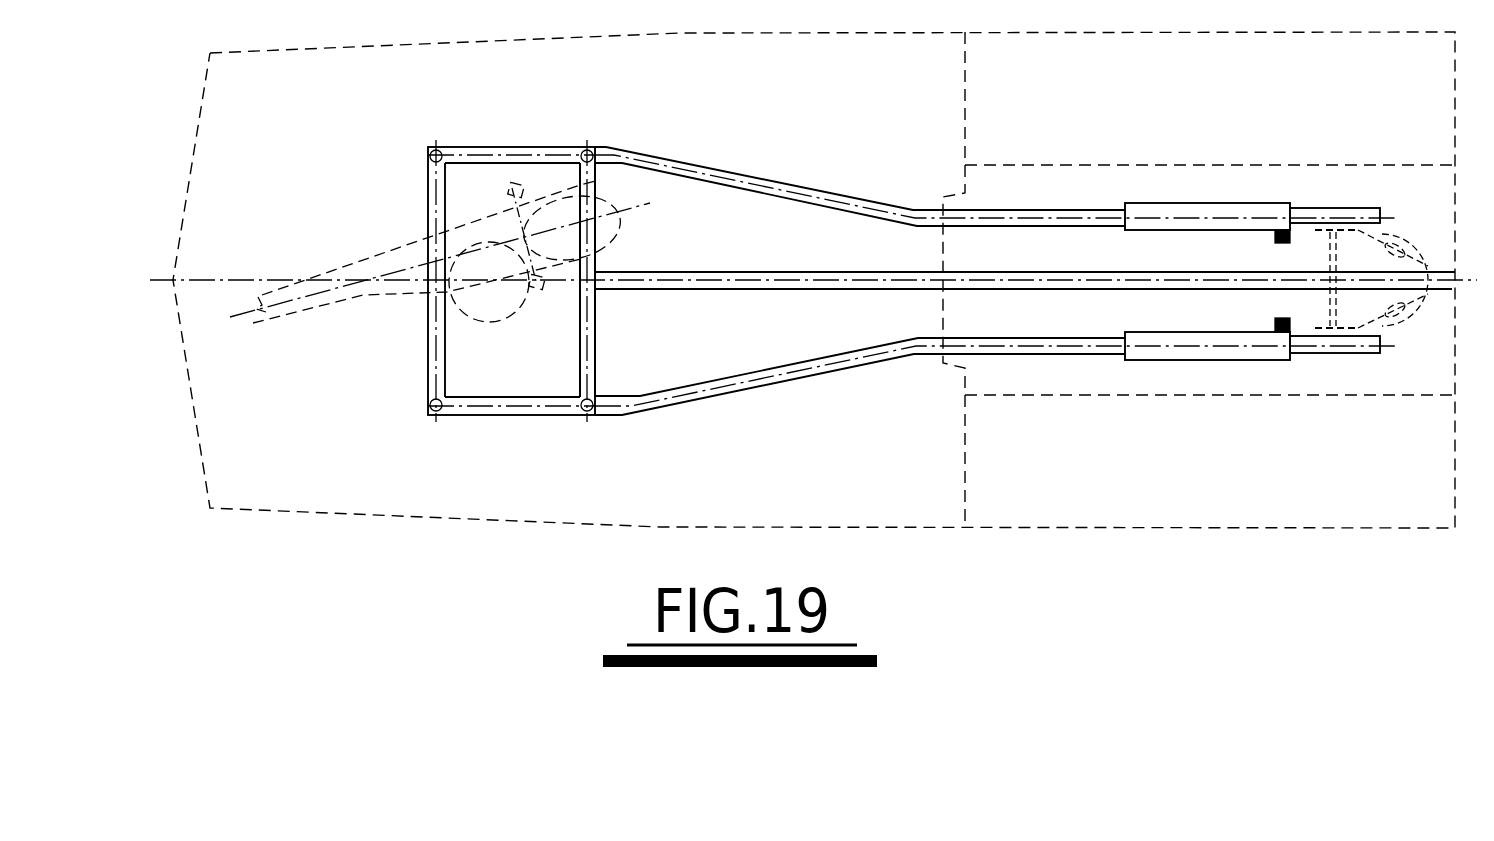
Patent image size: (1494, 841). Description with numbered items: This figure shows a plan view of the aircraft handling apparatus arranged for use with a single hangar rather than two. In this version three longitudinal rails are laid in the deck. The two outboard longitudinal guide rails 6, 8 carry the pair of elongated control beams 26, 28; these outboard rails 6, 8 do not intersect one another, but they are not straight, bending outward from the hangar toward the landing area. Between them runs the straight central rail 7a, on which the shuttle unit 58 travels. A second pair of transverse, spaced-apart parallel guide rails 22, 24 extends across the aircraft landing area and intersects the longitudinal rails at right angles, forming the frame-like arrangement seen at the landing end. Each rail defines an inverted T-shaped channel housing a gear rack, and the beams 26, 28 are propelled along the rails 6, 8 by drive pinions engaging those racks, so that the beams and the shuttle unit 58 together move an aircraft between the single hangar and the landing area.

The transverse guide rail 22 is at (428, 193).
The transverse guide rail 24 is at (597, 358).
The longitudinal guide rail 6 is at (730, 172).
The longitudinal guide rail 8 is at (862, 362).
The control beam 26 is at (1145, 210).
The control beam 28 is at (1182, 360).
The central rail 7a is at (1442, 285).
The shuttle unit 58 is at (1383, 243).